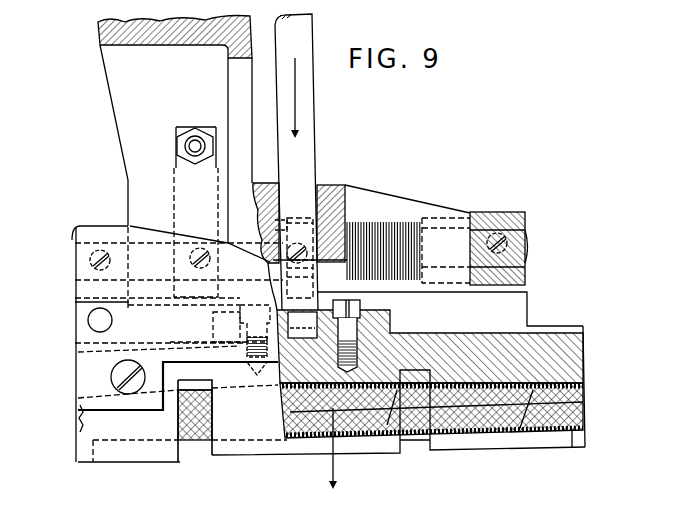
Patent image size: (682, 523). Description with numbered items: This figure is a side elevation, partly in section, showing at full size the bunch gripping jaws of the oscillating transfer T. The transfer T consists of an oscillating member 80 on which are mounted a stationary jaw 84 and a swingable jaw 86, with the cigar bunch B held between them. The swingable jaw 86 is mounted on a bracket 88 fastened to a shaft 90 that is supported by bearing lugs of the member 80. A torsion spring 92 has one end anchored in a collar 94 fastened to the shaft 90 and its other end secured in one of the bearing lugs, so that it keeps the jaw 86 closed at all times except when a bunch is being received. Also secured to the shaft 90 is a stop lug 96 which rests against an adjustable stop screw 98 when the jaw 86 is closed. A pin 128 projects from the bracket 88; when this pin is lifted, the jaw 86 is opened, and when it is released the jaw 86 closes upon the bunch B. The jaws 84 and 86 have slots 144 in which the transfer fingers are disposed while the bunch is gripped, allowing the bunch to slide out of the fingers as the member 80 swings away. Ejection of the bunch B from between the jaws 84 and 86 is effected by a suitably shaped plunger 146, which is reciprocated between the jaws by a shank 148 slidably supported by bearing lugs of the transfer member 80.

The oscillating member 80 is at (117, 57).
The adjustable stop screw 98 is at (217, 100).
The stop lug 96 is at (177, 167).
The shank 148 is at (312, 140).
The collar 94 is at (310, 217).
The torsion spring 92 is at (397, 220).
The shaft 90 is at (112, 243).
The pin 128 is at (92, 323).
The bracket 88 is at (85, 375).
The swingable jaw 86 is at (128, 456).
The slots 144 is at (207, 455).
The plunger 146 is at (573, 373).
The stationary jaw 84 is at (540, 440).
The cigar bunch B is at (492, 435).
The transfer T is at (382, 178).